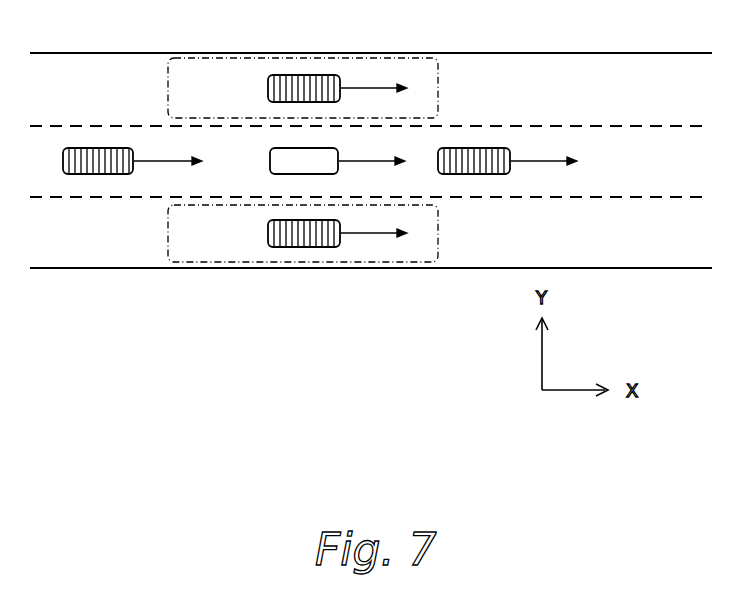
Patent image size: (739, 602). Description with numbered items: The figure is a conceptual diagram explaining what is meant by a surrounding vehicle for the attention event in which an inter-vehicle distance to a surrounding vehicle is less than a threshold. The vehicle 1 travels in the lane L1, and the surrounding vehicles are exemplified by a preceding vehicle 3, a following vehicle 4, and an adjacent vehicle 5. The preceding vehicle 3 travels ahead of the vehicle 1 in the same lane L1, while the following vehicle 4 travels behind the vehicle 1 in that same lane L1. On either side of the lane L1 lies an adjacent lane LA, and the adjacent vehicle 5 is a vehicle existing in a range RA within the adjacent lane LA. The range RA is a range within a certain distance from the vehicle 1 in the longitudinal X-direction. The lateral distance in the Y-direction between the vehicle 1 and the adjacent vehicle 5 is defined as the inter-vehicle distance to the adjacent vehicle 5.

The vehicle 1 is at (270, 161).
The preceding vehicle 3 is at (478, 174).
The following vehicle 4 is at (100, 174).
The adjacent vehicle 5 is at (300, 75).
The range RA is at (168, 59).
The adjacent lane LA is at (658, 100).
The lane L1 is at (657, 171).